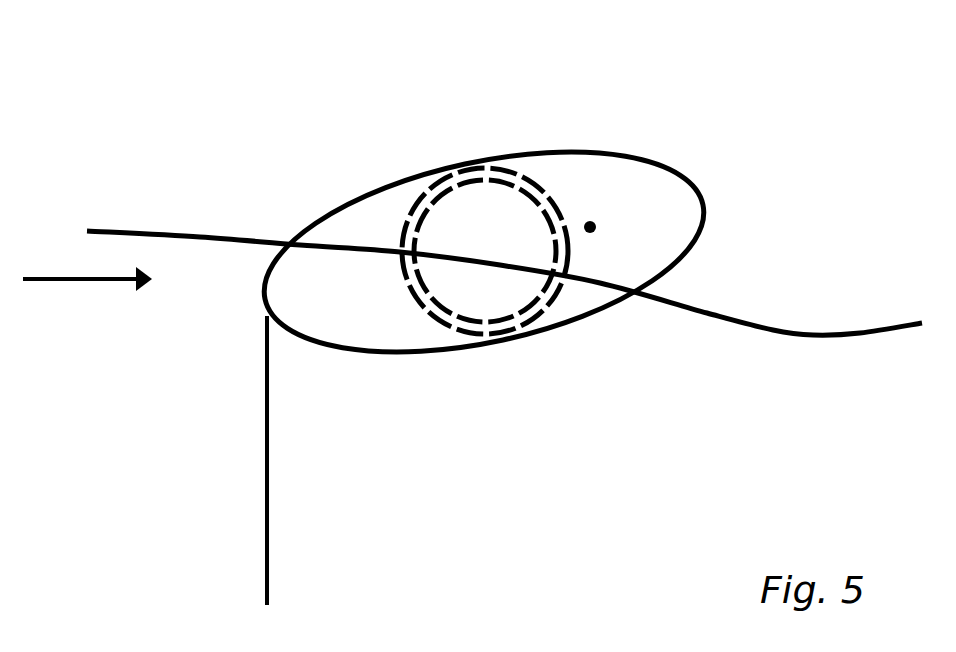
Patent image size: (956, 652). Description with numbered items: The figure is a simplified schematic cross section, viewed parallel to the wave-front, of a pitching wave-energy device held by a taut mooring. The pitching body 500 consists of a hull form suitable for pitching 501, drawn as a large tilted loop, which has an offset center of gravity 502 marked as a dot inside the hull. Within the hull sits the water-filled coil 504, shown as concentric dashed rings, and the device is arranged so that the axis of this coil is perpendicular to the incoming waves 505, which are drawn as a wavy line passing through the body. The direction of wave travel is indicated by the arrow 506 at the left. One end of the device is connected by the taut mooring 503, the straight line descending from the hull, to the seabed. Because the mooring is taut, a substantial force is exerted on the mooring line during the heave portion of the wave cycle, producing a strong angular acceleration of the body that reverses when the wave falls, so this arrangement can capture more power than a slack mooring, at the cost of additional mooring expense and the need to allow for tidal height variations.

The pitching body 500 is at (497, 204).
The hull form suitable for pitching 501 is at (430, 394).
The offset center of gravity 502 is at (573, 312).
The taut mooring 503 is at (327, 460).
The water-filled coil 504 is at (426, 204).
The incoming waves 505 is at (504, 328).
The arrow 506 is at (87, 337).